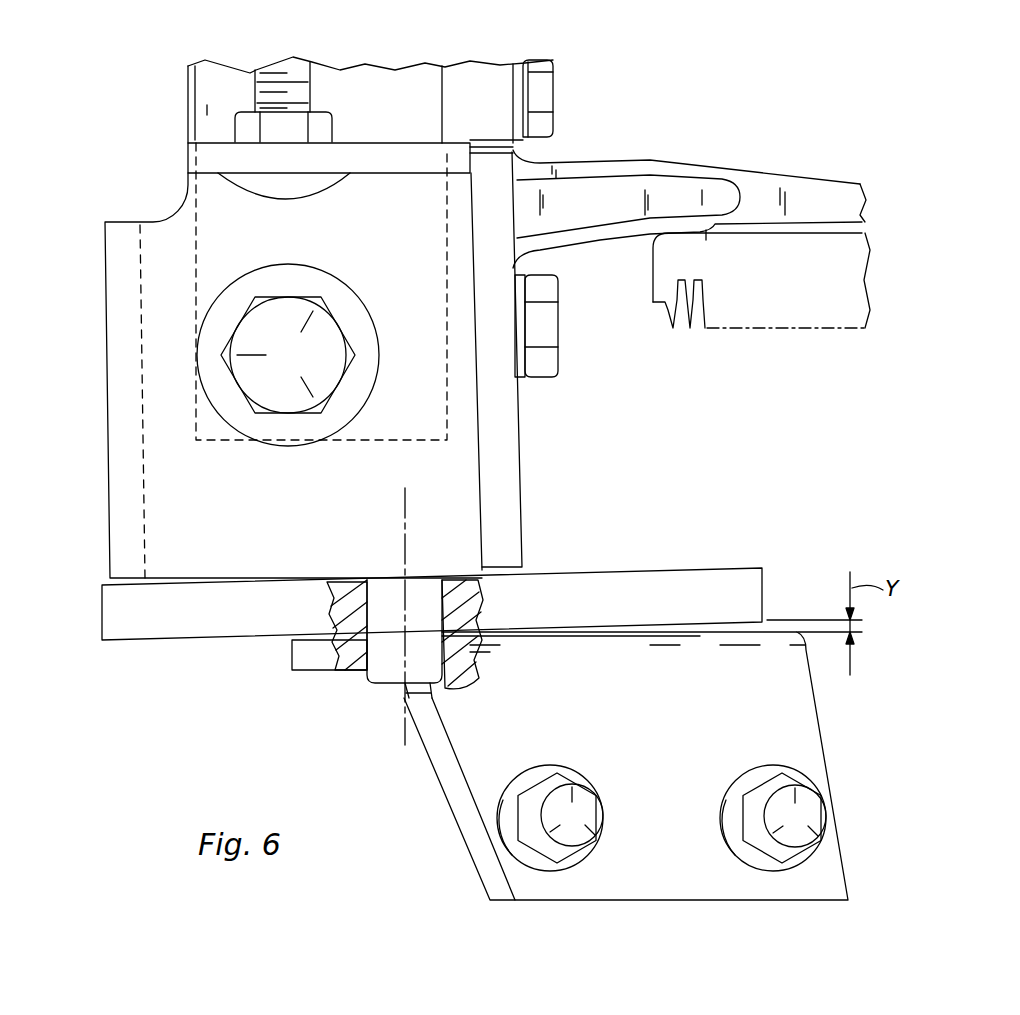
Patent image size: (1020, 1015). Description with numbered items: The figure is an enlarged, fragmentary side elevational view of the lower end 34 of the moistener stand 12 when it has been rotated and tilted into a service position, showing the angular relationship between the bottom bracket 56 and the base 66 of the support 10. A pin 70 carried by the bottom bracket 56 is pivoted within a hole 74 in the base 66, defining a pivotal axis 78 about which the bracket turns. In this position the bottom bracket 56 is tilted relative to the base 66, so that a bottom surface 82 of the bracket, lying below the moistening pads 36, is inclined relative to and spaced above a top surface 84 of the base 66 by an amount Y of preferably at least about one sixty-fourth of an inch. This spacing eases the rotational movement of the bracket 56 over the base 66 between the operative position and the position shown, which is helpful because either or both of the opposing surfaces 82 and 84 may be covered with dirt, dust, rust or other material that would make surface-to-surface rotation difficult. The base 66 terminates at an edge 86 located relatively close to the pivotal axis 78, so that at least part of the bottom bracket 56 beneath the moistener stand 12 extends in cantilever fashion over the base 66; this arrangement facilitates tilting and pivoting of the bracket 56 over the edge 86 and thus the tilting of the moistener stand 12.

The mounting bracket 10 is at (812, 716).
The moistener stand 12 is at (104, 468).
The lower end 34 is at (187, 108).
The moistening pads 36 is at (765, 329).
The bottom bracket 56 is at (762, 590).
The base 66 is at (845, 857).
The pin 70 is at (367, 680).
The hole 74 is at (468, 664).
The pivotal axis 78 is at (405, 526).
The bottom surface 82 is at (688, 636).
The top surface 84 is at (640, 632).
The edge 86 is at (292, 660).